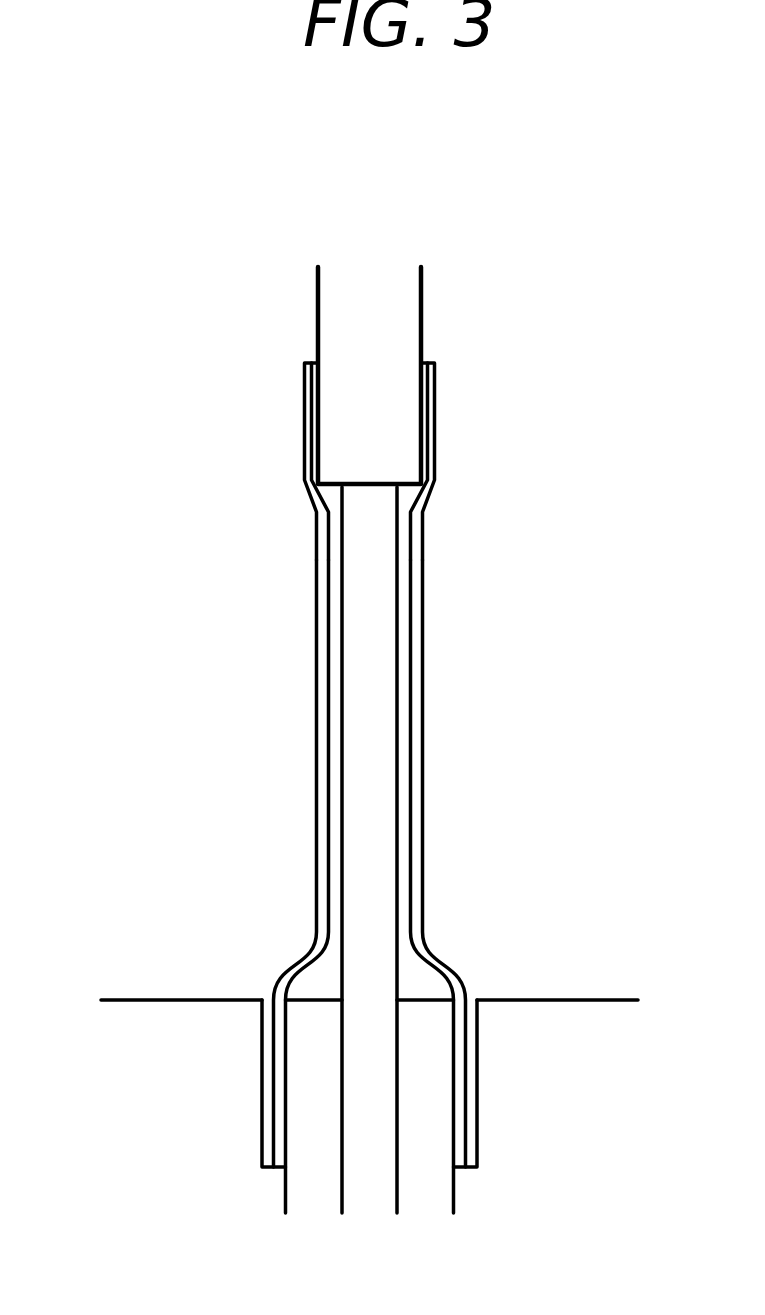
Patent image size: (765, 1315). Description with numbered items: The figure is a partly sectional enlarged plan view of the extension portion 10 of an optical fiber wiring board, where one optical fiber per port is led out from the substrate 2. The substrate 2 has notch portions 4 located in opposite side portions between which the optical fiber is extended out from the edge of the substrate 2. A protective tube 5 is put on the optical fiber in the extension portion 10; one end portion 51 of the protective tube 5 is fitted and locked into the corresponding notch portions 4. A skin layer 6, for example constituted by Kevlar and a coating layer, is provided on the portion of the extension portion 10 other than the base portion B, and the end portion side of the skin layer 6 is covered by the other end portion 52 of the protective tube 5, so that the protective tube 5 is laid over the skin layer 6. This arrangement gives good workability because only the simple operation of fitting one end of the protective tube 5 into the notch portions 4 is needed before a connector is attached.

The substrate 2 is at (163, 1032).
The notch portions 4 is at (476, 983).
The protective tube 5 is at (323, 825).
The skin layer 6 is at (343, 315).
The extension portion 10 is at (360, 645).
The one end portion of protective tube 51 is at (462, 1103).
The other end portion of protective tube 52 is at (427, 448).
The base portion B is at (478, 752).